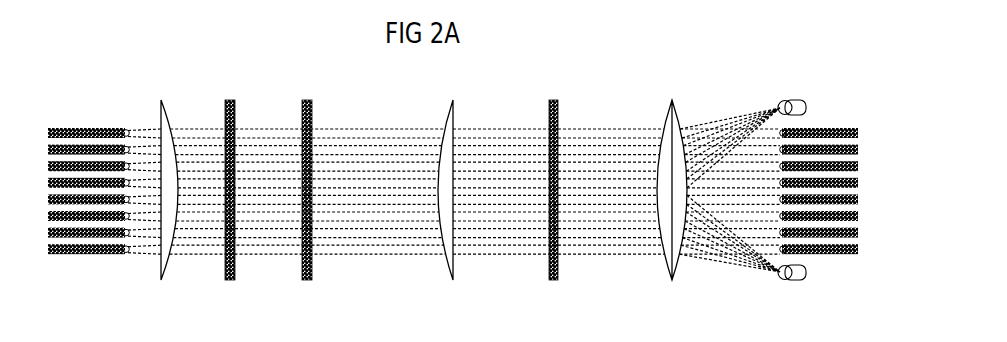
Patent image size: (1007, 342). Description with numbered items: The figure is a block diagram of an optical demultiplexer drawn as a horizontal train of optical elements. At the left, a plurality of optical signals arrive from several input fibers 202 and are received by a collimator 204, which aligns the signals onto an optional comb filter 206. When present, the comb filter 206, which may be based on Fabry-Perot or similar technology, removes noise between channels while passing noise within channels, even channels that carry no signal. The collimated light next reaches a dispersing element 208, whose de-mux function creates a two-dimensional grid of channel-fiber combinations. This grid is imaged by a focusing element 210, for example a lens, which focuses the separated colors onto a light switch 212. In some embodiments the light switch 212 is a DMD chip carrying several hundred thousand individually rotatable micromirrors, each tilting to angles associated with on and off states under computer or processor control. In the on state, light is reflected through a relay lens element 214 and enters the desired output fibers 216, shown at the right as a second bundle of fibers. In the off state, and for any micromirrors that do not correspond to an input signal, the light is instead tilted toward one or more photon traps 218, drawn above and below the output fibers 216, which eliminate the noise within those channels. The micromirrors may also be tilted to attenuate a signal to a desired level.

The input fibers 202 is at (77, 127).
The collimator 204 is at (160, 100).
The comb filter 206 is at (229, 281).
The dispersing element 208 is at (307, 100).
The focusing element 210 is at (452, 280).
The light switch 212 is at (553, 100).
The relay lens element 214 is at (672, 282).
The output fibers 216 is at (820, 126).
The photon trap 218 is at (791, 100).